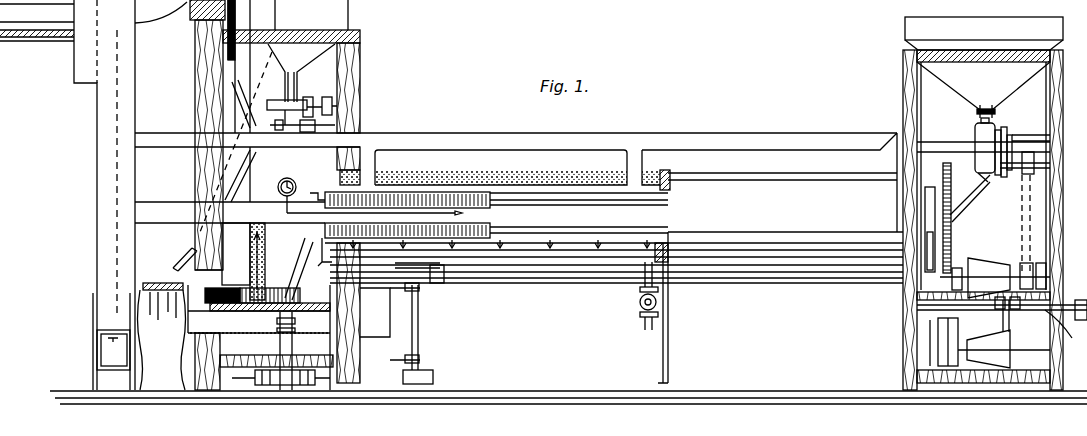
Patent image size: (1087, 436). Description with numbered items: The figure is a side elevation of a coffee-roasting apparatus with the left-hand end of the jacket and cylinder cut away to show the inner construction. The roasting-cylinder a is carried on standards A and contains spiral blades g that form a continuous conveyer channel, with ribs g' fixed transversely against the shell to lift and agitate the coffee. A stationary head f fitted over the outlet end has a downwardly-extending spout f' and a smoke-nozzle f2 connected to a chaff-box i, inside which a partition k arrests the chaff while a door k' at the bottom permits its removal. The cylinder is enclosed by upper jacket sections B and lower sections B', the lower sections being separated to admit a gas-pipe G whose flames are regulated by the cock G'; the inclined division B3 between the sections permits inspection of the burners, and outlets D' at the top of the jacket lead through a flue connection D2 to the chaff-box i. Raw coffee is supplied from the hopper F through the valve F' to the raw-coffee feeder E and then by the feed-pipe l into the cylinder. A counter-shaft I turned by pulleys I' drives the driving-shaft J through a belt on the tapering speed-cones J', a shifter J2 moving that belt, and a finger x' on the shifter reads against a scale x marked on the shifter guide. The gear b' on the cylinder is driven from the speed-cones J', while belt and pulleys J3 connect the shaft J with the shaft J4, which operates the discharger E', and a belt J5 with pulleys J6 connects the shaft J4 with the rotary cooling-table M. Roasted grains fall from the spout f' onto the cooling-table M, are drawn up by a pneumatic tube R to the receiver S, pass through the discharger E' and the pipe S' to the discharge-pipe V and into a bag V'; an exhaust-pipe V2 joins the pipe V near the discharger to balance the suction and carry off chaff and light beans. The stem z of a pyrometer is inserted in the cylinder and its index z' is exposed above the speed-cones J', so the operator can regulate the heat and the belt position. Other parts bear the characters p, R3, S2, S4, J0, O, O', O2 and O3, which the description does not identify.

The feed pipe p is at (97, 50).
The partition k is at (130, 195).
The chaff-box i is at (126, 124).
The door k' is at (111, 341).
The bag V' is at (162, 336).
The upper hopper R3 is at (311, 15).
The exhaust-pipe V2 is at (222, 62).
The flue connection D2 is at (166, 146).
The smoke-nozzle f2 is at (175, 201).
The discharger E' is at (301, 73).
The pipe S' is at (321, 95).
The pulley S2 is at (313, 100).
The receiver S is at (324, 109).
The index of the pyrometer z' is at (287, 174).
The stationary head f is at (306, 190).
The stem of the pyrometer z is at (388, 215).
The spiral blades g is at (579, 216).
The roasting-cylinder a is at (579, 205).
The outlets D' is at (522, 169).
The upper sections of the jacket B is at (782, 186).
The division between the jacket sections B3 is at (842, 232).
The lower sections of the jacket B' is at (610, 271).
The ribs g' is at (616, 273).
The gas-pipe G is at (616, 286).
The cock G' is at (632, 296).
The shaft J4 is at (857, 273).
The standards A is at (670, 346).
The belt J5 is at (437, 283).
The pulleys J6 is at (427, 378).
The bracket S4 is at (396, 306).
The pneumatic tube R is at (248, 242).
The rotary cooling-table M is at (245, 261).
The spout f' is at (295, 269).
The discharge-pipe V is at (179, 254).
The gear J0 is at (270, 386).
The hopper F is at (965, 33).
The valve F' is at (983, 90).
The raw-coffee feeder E is at (969, 147).
The pulley O2 is at (1004, 128).
The shaft O is at (1031, 124).
The shaft O' is at (1043, 173).
The belt O3 is at (1022, 210).
The feed-pipe l is at (952, 195).
The gear b' is at (957, 223).
The speed-cones J' is at (995, 268).
The driving-shaft J is at (1018, 264).
The belt and pulleys J3 is at (1048, 262).
The shifter J2 is at (1075, 298).
The finger x' is at (1006, 314).
The scale x is at (1063, 329).
The pulleys I' is at (942, 342).
The counter-shaft I is at (1004, 349).